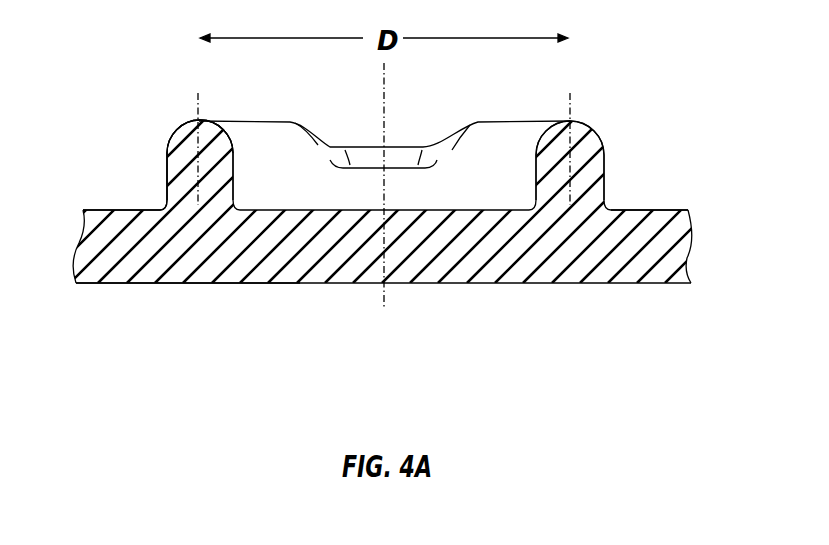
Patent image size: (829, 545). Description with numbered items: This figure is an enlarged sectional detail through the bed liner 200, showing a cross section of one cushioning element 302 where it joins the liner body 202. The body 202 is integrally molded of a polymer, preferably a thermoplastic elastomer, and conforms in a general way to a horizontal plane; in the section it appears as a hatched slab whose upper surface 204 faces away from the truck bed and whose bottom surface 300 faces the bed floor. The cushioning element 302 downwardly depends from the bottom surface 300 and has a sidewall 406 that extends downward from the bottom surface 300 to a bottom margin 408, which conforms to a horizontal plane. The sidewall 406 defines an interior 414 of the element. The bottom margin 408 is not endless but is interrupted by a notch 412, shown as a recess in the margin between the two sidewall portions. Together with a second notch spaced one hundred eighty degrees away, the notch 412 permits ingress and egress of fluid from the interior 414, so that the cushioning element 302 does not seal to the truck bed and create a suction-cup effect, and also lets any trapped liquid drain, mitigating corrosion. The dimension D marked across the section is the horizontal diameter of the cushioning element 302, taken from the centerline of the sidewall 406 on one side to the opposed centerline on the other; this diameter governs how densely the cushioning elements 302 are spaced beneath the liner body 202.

The bed liner 200 is at (683, 277).
The body 202 is at (660, 211).
The upper surface 204 is at (160, 284).
The bottom surface 300 is at (83, 211).
The cushioning element 302 is at (173, 133).
The sidewall 406 is at (178, 192).
The bottom margin 408 is at (197, 120).
The notch 412 is at (403, 145).
The interior 414 is at (318, 176).